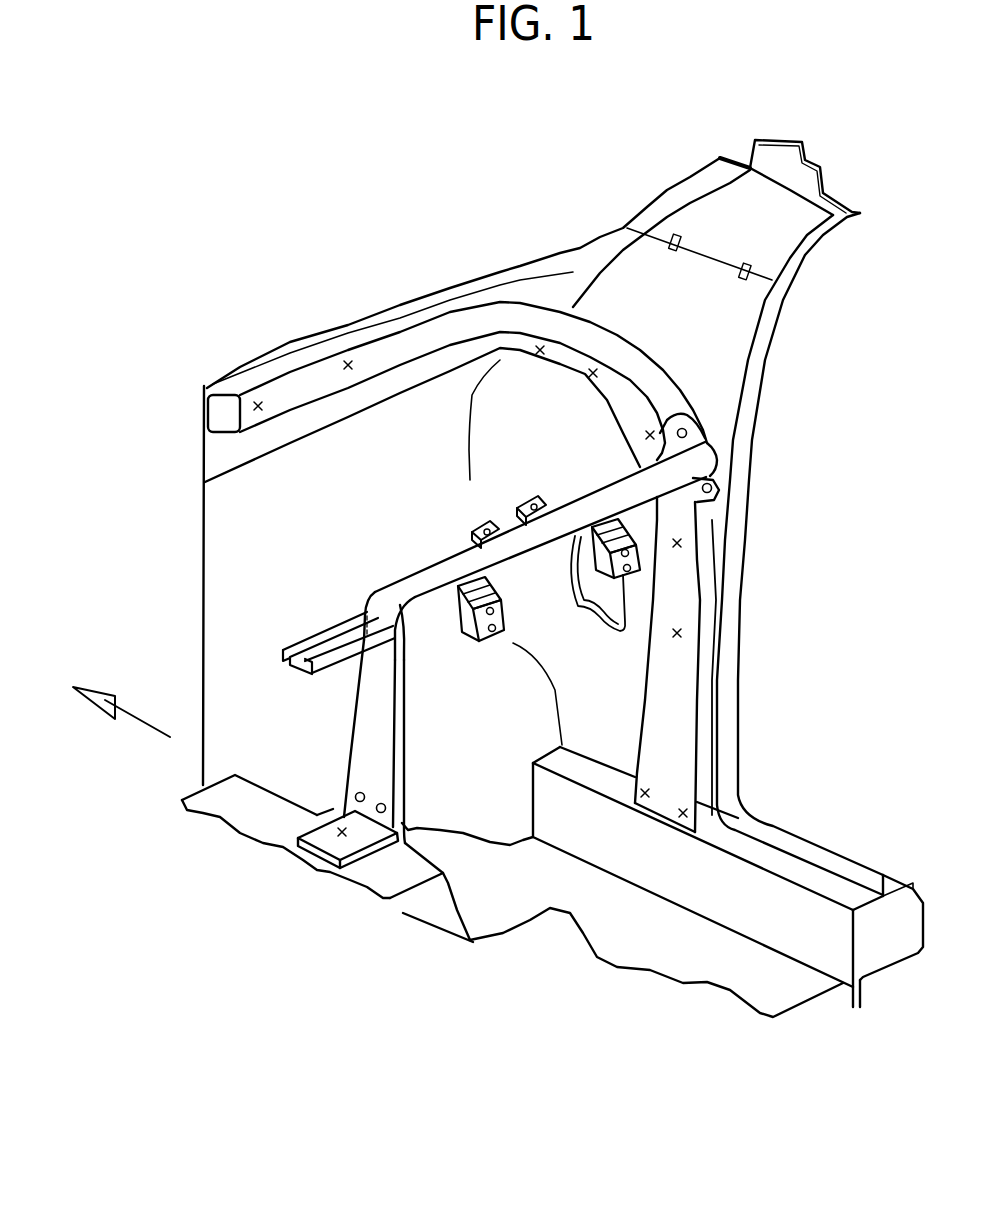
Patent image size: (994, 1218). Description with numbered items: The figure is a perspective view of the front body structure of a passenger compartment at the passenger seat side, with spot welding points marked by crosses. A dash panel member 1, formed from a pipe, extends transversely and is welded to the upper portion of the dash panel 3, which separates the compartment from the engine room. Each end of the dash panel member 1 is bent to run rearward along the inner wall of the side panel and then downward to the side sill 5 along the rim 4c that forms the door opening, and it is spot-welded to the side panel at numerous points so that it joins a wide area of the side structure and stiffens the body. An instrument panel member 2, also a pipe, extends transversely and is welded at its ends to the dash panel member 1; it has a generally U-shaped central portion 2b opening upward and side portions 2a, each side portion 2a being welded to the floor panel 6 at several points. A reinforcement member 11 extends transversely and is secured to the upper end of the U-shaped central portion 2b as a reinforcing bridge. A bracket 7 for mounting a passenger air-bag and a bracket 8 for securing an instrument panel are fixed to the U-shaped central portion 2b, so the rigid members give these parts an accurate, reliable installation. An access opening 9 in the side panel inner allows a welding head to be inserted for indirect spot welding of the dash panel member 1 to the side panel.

The dash panel member 1 is at (397, 350).
The instrument panel member 2 is at (342, 584).
The side portion 2a is at (353, 735).
The U-shaped central portion 2b is at (420, 567).
The dash panel 3 is at (222, 583).
The rim 4c is at (732, 622).
The side sill 5 is at (775, 857).
The floor panel 6 is at (670, 973).
The bracket 7 is at (470, 530).
The bracket 8 is at (620, 510).
The access opening 9 is at (593, 620).
The reinforcement member 11 is at (300, 640).